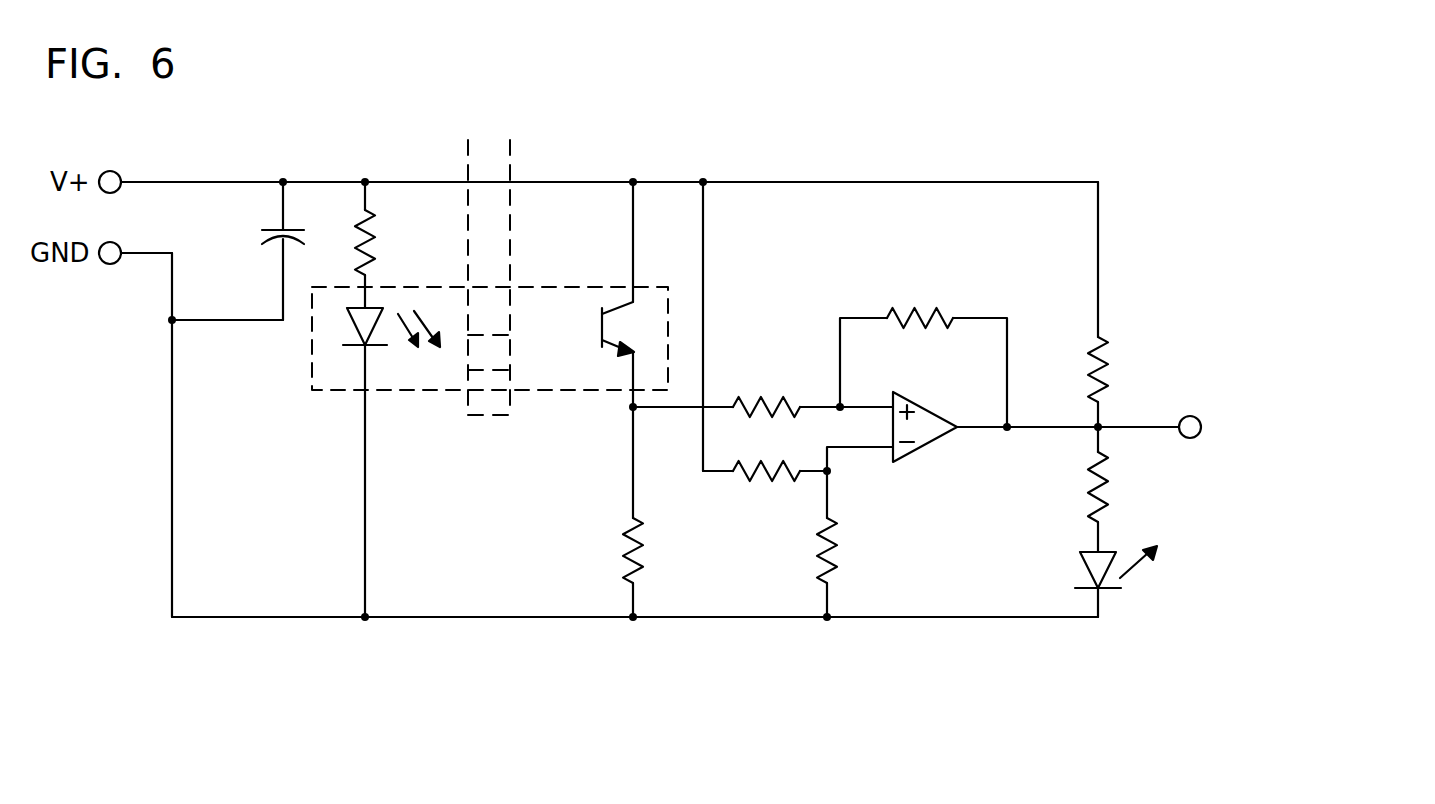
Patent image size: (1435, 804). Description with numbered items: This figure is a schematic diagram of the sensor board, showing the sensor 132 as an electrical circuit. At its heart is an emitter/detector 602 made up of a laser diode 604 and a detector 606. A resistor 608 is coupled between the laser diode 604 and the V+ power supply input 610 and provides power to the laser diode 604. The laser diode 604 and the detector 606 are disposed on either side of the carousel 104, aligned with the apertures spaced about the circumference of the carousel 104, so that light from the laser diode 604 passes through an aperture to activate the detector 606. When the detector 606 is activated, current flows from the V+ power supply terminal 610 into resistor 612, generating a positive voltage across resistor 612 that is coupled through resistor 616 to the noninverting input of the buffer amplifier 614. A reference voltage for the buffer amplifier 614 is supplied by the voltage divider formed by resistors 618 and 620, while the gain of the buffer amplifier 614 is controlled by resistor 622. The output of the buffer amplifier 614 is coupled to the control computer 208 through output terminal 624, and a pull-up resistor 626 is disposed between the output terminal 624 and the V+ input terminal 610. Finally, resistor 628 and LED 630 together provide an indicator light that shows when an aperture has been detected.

The V+ power supply input 610 is at (119, 173).
The resistor 608 is at (358, 236).
The laser diode 604 is at (347, 330).
The emitter/detector 602 is at (668, 318).
The carousel 104 is at (510, 170).
The control computer 208 is at (468, 372).
The detector 606 is at (602, 312).
The resistor 612 is at (627, 555).
The resistor 616 is at (758, 400).
The resistor 618 is at (770, 478).
The resistor 620 is at (822, 552).
The resistor 622 is at (916, 316).
The buffer amplifier 614 is at (930, 443).
The sensor 132 is at (925, 159).
The pull-up resistor 626 is at (1105, 365).
The resistor 628 is at (1105, 483).
The output terminal 624 is at (1201, 418).
The LED 630 is at (1085, 570).